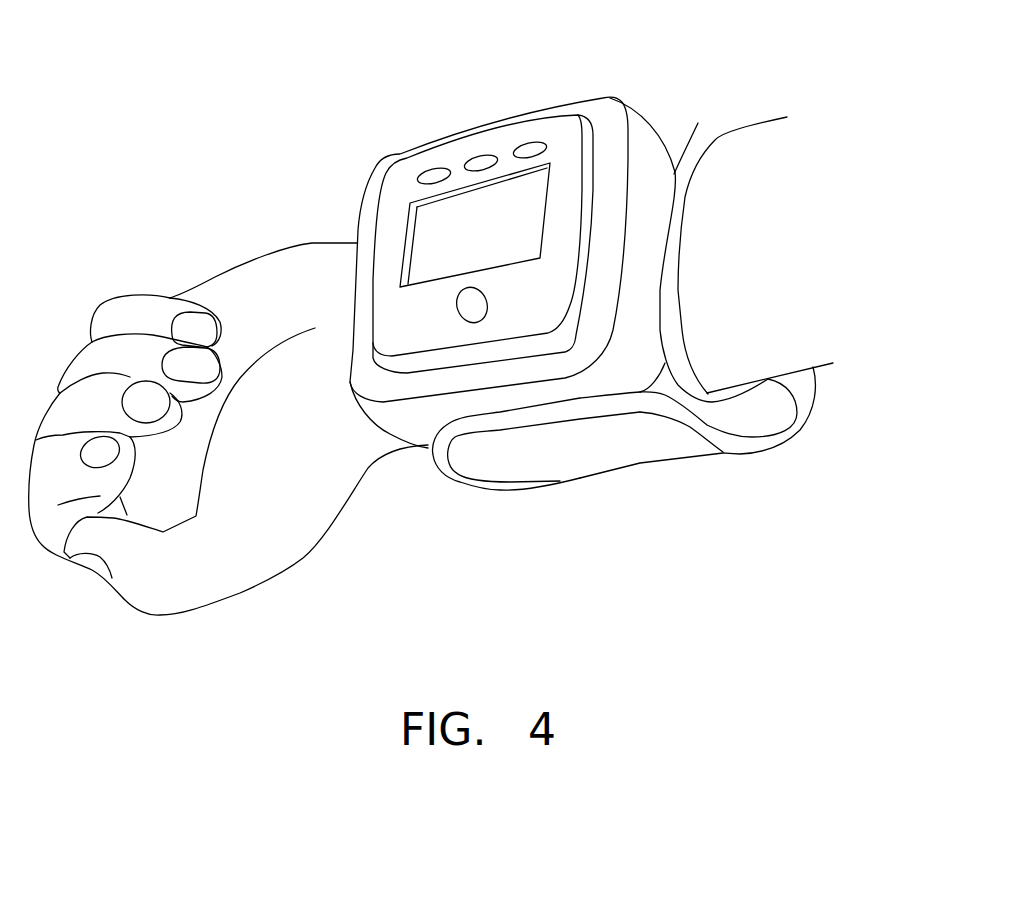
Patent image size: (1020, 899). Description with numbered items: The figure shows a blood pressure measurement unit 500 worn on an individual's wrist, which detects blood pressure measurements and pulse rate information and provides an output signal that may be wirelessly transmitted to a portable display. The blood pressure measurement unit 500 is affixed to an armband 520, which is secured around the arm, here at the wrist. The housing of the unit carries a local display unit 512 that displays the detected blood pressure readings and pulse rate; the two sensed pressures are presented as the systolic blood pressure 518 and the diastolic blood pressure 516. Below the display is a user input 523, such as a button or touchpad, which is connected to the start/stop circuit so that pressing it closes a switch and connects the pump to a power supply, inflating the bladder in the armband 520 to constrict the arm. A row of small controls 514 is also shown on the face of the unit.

The blood pressure measurement unit 500 is at (777, 477).
The local display unit 512 is at (427, 243).
The button 514 is at (433, 170).
The diastolic blood pressure 516 is at (482, 158).
The systolic blood pressure 518 is at (530, 147).
The armband 520 is at (590, 448).
The user input 523 is at (473, 310).